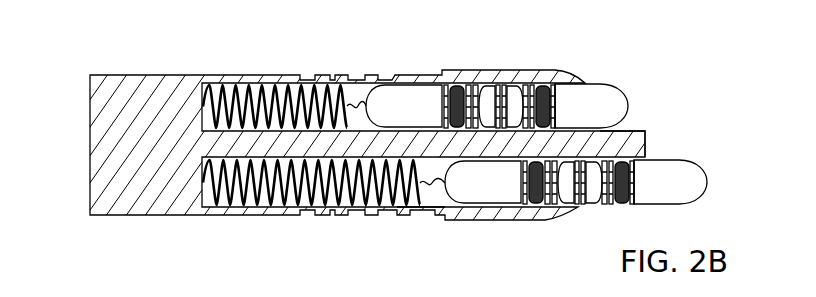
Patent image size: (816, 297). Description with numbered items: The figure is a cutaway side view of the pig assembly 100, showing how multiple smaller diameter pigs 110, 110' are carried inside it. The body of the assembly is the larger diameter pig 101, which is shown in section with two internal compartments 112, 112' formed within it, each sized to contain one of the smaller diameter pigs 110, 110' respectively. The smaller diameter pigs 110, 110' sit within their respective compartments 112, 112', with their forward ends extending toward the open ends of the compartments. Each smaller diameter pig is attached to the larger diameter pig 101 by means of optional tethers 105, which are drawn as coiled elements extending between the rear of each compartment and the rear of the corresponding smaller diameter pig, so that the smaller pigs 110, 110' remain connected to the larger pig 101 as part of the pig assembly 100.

The pig assembly 100 is at (48, 100).
The larger diameter pig 101 is at (130, 218).
The tethers 105 is at (278, 80).
The smaller diameter pig 110 is at (522, 93).
The smaller diameter pig 110' is at (600, 168).
The internal compartment 112 is at (652, 132).
The internal compartment 112' is at (421, 223).